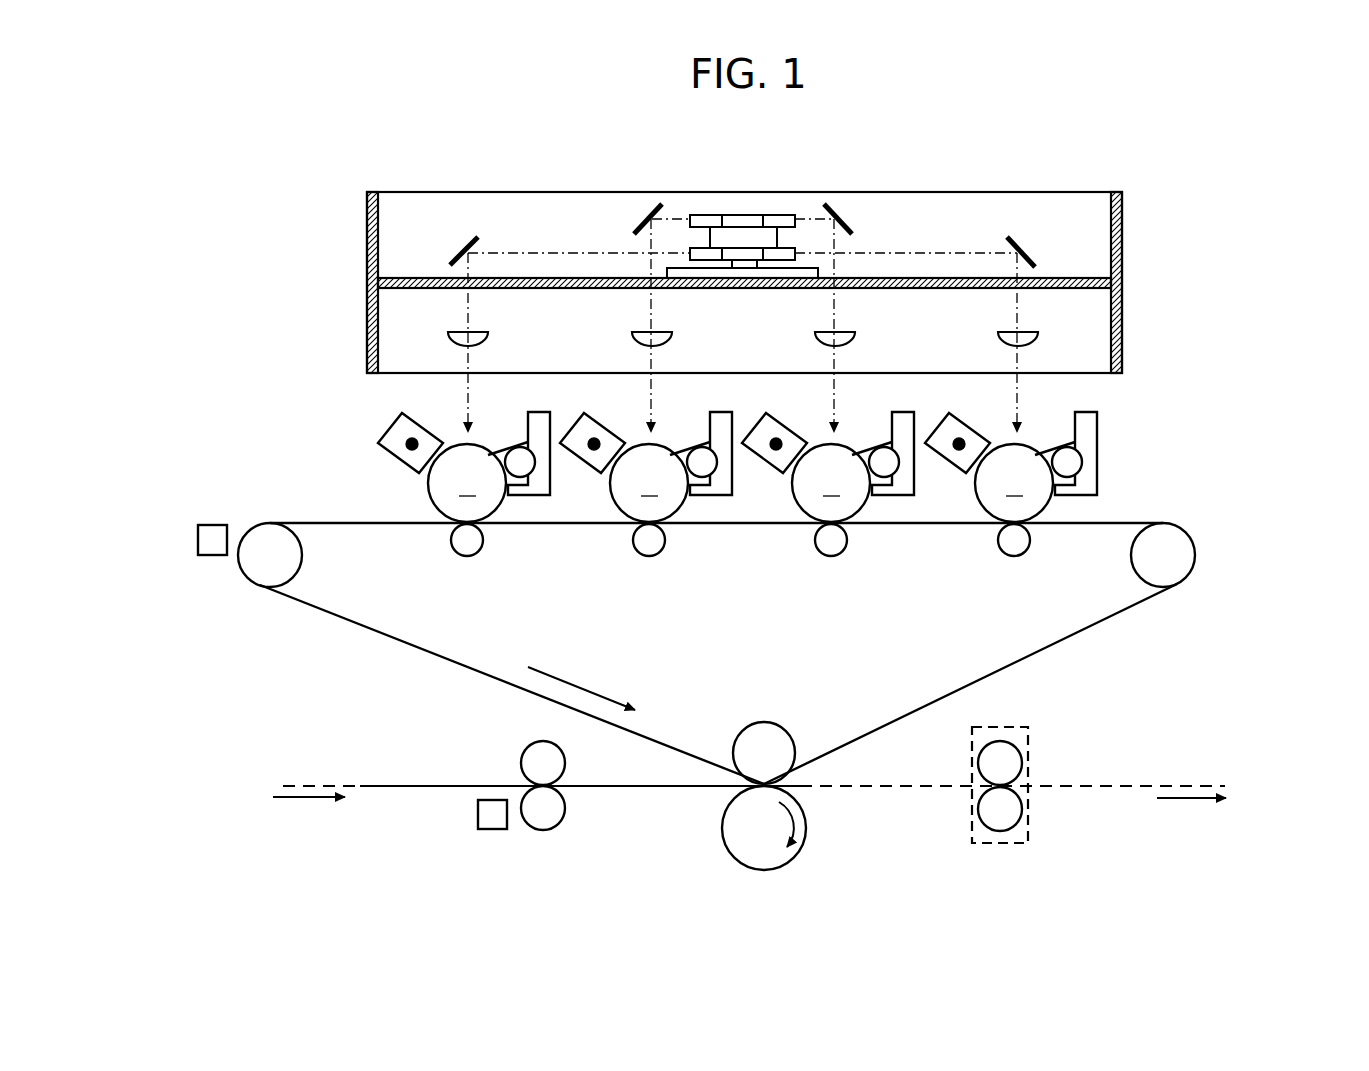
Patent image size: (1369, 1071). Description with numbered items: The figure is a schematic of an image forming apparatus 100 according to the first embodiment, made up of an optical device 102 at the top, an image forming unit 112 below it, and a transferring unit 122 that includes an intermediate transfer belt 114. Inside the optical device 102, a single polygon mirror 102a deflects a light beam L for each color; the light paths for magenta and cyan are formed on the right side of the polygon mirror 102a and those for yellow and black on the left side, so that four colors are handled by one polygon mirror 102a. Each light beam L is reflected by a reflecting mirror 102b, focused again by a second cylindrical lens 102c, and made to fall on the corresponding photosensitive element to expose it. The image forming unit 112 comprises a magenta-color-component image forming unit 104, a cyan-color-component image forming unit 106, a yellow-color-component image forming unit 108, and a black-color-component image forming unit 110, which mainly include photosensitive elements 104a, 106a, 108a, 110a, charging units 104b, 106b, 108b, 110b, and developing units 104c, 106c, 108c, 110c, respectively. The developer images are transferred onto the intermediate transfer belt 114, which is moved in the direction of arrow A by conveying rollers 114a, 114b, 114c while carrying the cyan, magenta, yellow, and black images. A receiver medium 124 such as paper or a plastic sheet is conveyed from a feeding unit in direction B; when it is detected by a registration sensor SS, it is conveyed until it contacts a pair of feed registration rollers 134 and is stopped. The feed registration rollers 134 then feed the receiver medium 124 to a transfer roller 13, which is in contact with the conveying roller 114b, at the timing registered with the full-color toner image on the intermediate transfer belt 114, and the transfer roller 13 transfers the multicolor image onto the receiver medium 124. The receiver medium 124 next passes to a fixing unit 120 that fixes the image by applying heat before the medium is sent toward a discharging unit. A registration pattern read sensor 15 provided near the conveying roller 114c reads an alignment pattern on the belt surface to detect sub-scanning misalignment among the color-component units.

The image forming apparatus 100 is at (1210, 150).
The optical device 102 is at (1122, 226).
The polygon mirror 102a is at (742, 214).
The reflecting mirror 102b is at (467, 244).
The second cylindrical lens 102c is at (488, 343).
The magenta-color-component image forming unit 104 is at (1015, 469).
The photosensitive element 104a is at (1045, 484).
The charging unit 104b is at (952, 457).
The developing unit 104c is at (1064, 442).
The cyan-color-component image forming unit 106 is at (832, 469).
The photosensitive element 106a is at (862, 484).
The charging unit 106b is at (769, 457).
The developing unit 106c is at (881, 442).
The yellow-color-component image forming unit 108 is at (650, 469).
The photosensitive element 108a is at (680, 484).
The charging unit 108b is at (587, 457).
The developing unit 108c is at (699, 442).
The black-color-component image forming unit 110 is at (383, 428).
The photosensitive element 110a is at (492, 503).
The charging unit 110b is at (395, 446).
The developing unit 110c is at (527, 438).
The image forming unit 112 is at (1214, 380).
The intermediate transfer belt 114 is at (767, 528).
The conveying roller 114a is at (1191, 555).
The conveying roller 114b is at (766, 724).
The conveying roller 114c is at (296, 552).
The fixing unit 120 is at (1000, 845).
The transferring unit 122 is at (1275, 527).
The receiver medium 124 is at (448, 788).
The transfer roller 13 is at (730, 845).
The feed registration rollers 134 is at (557, 817).
The registration pattern read sensor 15 is at (214, 524).
The registration sensor SS is at (492, 830).
The light beam L is at (463, 399).